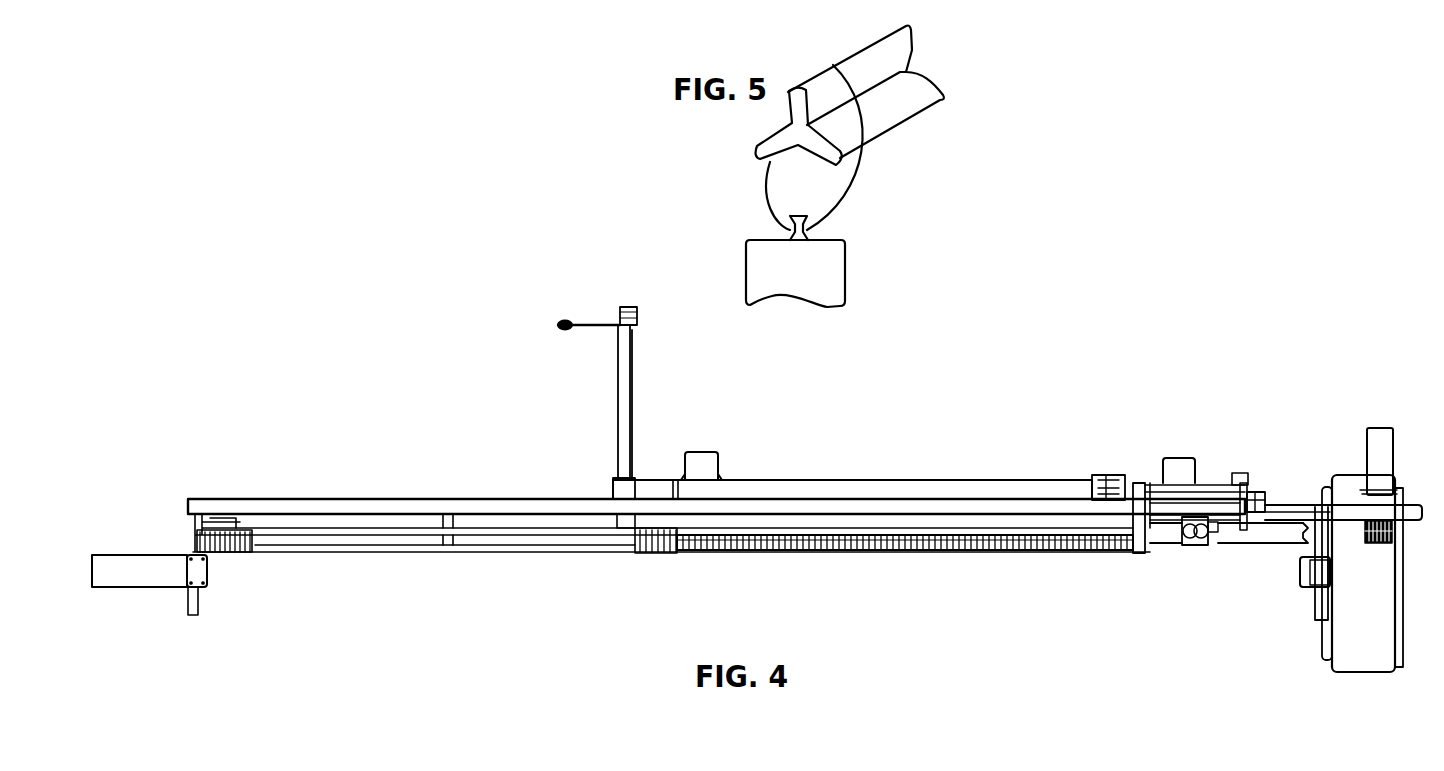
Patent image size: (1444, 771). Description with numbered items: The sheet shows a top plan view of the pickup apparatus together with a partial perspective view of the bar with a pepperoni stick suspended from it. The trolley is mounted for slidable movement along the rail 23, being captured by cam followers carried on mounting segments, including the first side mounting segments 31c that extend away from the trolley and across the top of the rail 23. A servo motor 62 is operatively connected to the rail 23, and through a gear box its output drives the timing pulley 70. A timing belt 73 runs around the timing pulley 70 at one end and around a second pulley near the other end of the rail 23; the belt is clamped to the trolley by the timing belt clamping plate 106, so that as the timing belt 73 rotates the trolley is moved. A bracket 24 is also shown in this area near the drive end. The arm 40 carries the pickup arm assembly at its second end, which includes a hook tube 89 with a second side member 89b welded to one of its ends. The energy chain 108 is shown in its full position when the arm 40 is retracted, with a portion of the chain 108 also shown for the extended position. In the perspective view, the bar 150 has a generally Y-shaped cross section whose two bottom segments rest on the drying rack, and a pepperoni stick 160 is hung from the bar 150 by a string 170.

In FIG. 4, the rail 23 is at (332, 510).
In FIG. 4, the bracket 24 is at (1320, 596).
In FIG. 4, the first side mounting segments 31c is at (1253, 491).
In FIG. 4, the arm 40 is at (830, 490).
In FIG. 4, the servo motor 62 is at (1373, 442).
In FIG. 4, the timing pulley 70 is at (1382, 546).
In FIG. 4, the timing belt 73 is at (1155, 541).
In FIG. 4, the hook tube 89 is at (632, 395).
In FIG. 4, the second side member 89b is at (598, 321).
In FIG. 4, the timing belt clamping plate 106 is at (1185, 538).
In FIG. 4, the energy chain 108 is at (983, 551).
In FIG. 5, the bar 150 is at (898, 120).
In FIG. 5, the pepperoni stick 160 is at (845, 272).
In FIG. 5, the string 170 is at (850, 194).